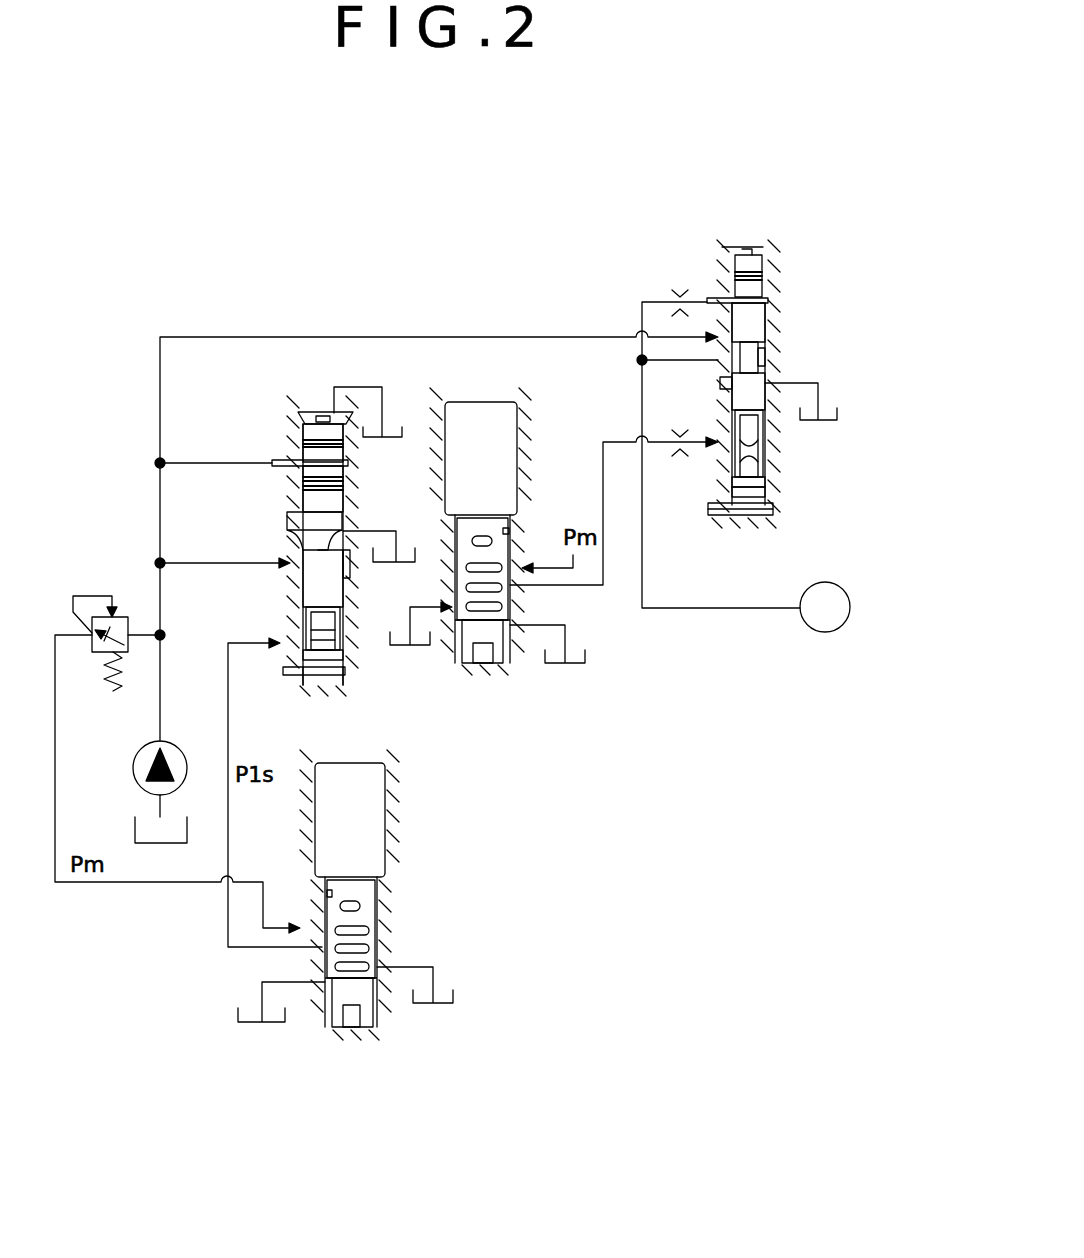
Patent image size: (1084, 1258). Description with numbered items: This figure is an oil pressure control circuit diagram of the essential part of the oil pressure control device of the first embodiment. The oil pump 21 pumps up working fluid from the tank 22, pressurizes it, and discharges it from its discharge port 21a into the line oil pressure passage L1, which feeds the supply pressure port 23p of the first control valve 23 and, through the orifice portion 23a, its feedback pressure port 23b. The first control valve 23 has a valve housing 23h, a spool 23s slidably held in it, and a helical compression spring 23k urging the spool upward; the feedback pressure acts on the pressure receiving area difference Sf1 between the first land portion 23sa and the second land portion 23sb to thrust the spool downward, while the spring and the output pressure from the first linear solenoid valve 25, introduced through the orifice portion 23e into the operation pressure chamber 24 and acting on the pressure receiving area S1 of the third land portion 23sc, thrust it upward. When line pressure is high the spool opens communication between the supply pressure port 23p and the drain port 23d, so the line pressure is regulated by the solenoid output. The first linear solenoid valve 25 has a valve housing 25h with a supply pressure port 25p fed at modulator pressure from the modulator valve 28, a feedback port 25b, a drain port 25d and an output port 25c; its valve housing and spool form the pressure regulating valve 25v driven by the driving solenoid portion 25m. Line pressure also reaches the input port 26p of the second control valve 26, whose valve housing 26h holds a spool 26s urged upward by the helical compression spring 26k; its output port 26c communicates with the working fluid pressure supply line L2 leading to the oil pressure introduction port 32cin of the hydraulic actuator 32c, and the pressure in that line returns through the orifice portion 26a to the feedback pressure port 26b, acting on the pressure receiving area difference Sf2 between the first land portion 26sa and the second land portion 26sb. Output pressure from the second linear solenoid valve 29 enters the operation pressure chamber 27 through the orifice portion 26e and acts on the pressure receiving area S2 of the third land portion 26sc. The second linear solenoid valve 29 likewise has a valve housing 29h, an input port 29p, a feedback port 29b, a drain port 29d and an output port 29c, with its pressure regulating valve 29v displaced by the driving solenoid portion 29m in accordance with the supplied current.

The oil pump 21 is at (190, 752).
The discharge port 21a is at (158, 748).
The tank 22 is at (135, 825).
The first control valve 23 is at (320, 386).
The orifice portion 23a is at (258, 478).
The feedback pressure port 23b is at (290, 462).
The drain port 23d is at (345, 518).
The orifice portion 23e is at (290, 648).
The valve housing 23h is at (312, 412).
The helical compression spring 23k is at (350, 660).
The supply pressure port 23p is at (300, 542).
The spool 23s is at (293, 520).
The first land portion 23sa is at (345, 455).
The second land portion 23sb is at (345, 482).
The third land portion 23sc is at (300, 572).
The operation pressure chamber 24 is at (300, 655).
The first linear solenoid valve 25 is at (415, 803).
The feedback port 25b is at (365, 907).
The output port 25c is at (305, 967).
The drain port 25d is at (392, 962).
The valve housing 25h is at (405, 846).
The driving solenoid portion 25m is at (350, 775).
The supply pressure port 25p is at (320, 915).
The pressure regulating valve 25v is at (316, 1022).
The second control valve 26 is at (754, 222).
The orifice portion 26a is at (682, 290).
The feedback pressure port 26b is at (722, 290).
The output port 26c is at (718, 372).
The orifice portion 26e is at (685, 432).
The valve housing 26h is at (780, 262).
The helical compression spring 26k is at (770, 465).
The input port 26p is at (716, 347).
The spool 26s is at (770, 352).
The first land portion 26sa is at (770, 277).
The second land portion 26sb is at (772, 328).
The third land portion 26sc is at (772, 380).
The operation pressure chamber 27 is at (722, 482).
The modulator valve 28 is at (112, 608).
The second linear solenoid valve 29 is at (562, 412).
The feedback port 29b is at (492, 540).
The output port 29c is at (522, 590).
The drain port 29d is at (445, 605).
The valve housing 29h is at (495, 390).
The driving solenoid portion 29m is at (468, 400).
The input port 29p is at (510, 560).
The pressure regulating valve 29v is at (456, 650).
The hydraulic actuator 32c is at (822, 582).
The oil pressure introduction port 32cin is at (802, 615).
The line oil pressure passage L1 is at (192, 337).
The working fluid pressure supply line L2 is at (668, 610).
The pressure receiving area difference Sf1 is at (316, 442).
The pressure receiving area difference Sf2 is at (772, 302).
The pressure receiving area S1 is at (306, 626).
The pressure receiving area S2 is at (770, 440).